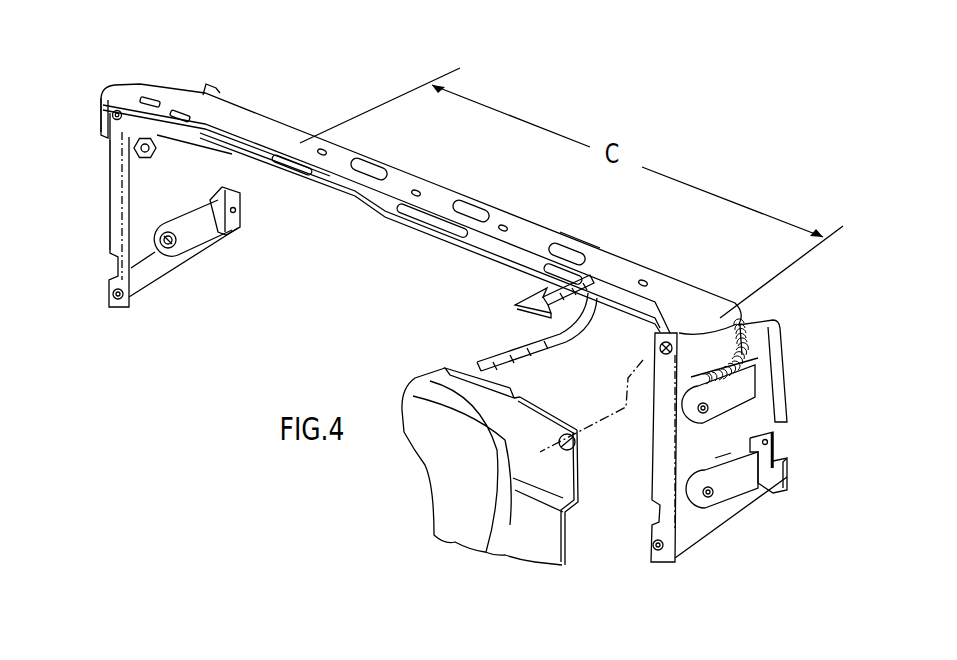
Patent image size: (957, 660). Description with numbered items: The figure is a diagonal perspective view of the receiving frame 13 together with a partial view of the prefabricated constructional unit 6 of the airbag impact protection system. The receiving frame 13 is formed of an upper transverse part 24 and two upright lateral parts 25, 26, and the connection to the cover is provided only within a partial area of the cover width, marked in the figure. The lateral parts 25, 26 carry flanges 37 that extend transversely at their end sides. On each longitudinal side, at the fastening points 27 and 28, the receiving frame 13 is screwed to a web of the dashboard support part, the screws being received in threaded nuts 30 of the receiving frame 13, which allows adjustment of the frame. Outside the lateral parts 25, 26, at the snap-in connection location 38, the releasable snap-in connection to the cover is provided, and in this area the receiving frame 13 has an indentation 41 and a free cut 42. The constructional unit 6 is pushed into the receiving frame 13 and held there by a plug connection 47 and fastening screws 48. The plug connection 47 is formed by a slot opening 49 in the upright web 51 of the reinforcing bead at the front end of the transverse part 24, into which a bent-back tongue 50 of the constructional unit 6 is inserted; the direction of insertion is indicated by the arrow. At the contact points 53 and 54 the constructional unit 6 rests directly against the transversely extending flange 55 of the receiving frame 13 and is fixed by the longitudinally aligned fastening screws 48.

The constructional unit 6 is at (427, 490).
The receiving frame 13 is at (443, 181).
The upper transverse part 24 is at (533, 226).
The lateral part 25 is at (723, 513).
The lateral part 26 is at (153, 281).
The fastening point 27 is at (160, 150).
The fastening point 28 is at (183, 238).
The threaded nut 30 is at (136, 112).
The flange 37 is at (210, 86).
The snap-in connection location 38 is at (243, 200).
The indentation 41 is at (773, 433).
The free cut 42 is at (789, 472).
The plug connection 47 is at (598, 289).
The fastening screw 48 is at (561, 435).
The slot opening 49 is at (606, 290).
The bent-back tongue 50 is at (506, 389).
The upright web 51 is at (312, 188).
The contact point 53 is at (115, 302).
The contact point 54 is at (108, 124).
The transversely extending flange 55 is at (121, 213).